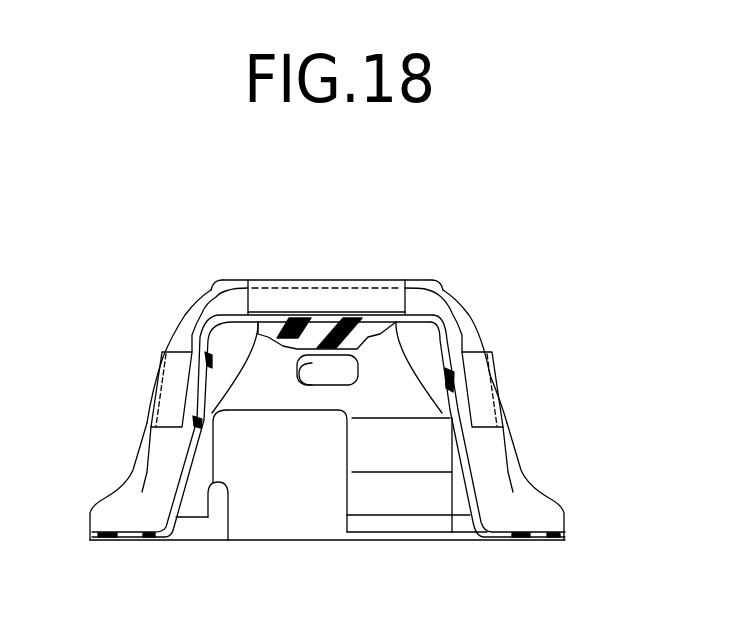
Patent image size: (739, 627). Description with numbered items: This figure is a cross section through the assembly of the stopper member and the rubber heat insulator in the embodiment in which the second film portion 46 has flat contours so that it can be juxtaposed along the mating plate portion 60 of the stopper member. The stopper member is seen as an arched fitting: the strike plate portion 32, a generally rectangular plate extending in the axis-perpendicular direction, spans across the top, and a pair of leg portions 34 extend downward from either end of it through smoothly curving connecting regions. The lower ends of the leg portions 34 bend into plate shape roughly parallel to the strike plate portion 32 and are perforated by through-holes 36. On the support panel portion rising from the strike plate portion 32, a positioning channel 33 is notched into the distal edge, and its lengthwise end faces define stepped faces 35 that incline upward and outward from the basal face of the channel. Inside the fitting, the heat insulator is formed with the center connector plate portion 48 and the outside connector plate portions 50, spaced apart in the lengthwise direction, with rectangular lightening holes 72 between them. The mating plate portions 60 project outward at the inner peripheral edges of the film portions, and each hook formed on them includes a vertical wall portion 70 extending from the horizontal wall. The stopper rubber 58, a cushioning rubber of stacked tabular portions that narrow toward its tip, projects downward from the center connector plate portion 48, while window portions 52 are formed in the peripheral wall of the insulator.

The strike plate portion 32 is at (352, 318).
The positioning channel 33 is at (307, 285).
The leg portion 34 is at (180, 465).
The stepped face 35 is at (255, 282).
The through-hole 36 is at (124, 540).
The second film portion 46 is at (397, 497).
The center connector plate portion 48 is at (292, 322).
The outside connector plate portion 50 is at (205, 382).
The window portion 52 is at (228, 540).
The stopper rubber 58 is at (320, 340).
The mating plate portion 60 is at (520, 493).
The vertical wall portion 70 is at (170, 405).
The lightening hole 72 is at (205, 335).